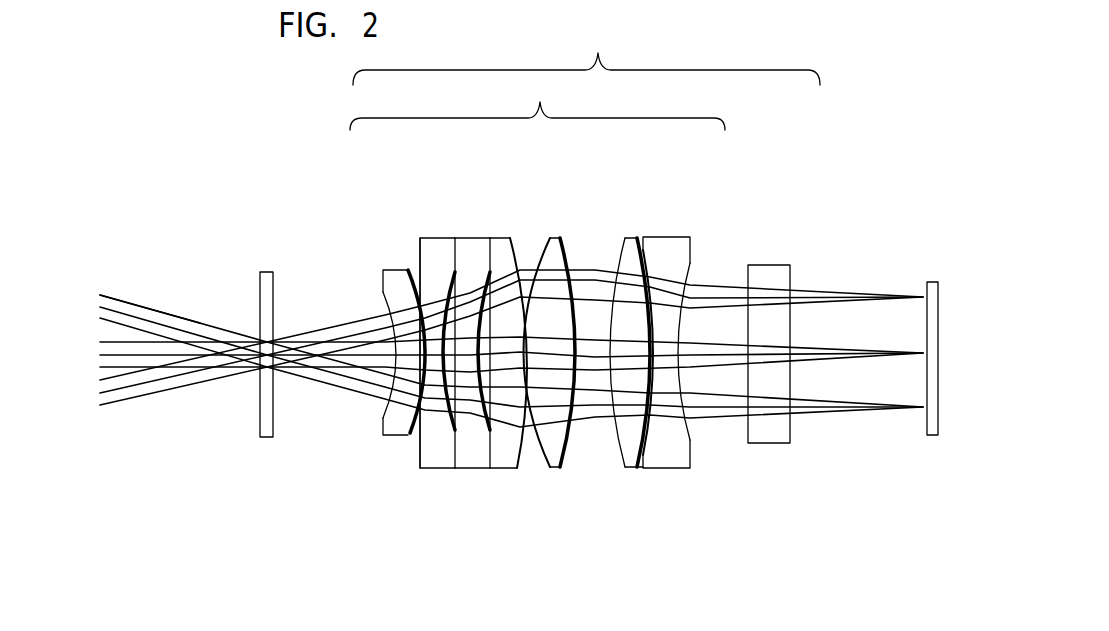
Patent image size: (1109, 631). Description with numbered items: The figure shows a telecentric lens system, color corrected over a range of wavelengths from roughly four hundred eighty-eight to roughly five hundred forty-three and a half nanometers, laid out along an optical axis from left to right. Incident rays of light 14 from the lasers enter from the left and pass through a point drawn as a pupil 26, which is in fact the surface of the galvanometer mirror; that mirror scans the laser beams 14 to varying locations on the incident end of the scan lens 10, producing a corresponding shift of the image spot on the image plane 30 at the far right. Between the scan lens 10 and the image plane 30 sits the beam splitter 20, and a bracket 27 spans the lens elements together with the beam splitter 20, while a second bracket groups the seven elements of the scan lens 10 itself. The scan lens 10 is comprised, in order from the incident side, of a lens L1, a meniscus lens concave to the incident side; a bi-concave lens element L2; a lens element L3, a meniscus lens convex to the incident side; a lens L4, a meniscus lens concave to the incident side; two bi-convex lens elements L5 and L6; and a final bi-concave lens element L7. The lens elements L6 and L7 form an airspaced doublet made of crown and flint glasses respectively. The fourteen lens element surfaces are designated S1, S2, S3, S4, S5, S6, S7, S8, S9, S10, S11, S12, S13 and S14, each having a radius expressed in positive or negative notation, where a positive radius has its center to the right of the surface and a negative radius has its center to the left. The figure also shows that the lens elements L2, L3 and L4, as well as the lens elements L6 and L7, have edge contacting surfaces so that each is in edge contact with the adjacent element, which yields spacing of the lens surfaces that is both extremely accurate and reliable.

The incident rays of light 14 is at (167, 320).
The pupil 26 is at (265, 272).
The projection lens assembly 27 is at (582, 309).
The scan lens 10 is at (562, 335).
The beam splitter 20 is at (767, 265).
The image plane 30 is at (932, 437).
The lens L1 is at (398, 270).
The lens element L2 is at (443, 238).
The lens element L3 is at (470, 238).
The lens L4 is at (497, 238).
The lens element L5 is at (550, 238).
The lens element L6 is at (628, 238).
The lens element L7 is at (667, 237).
The lens element surface S1 is at (385, 405).
The lens element surface S2 is at (418, 432).
The lens element surface S3 is at (428, 452).
The lens element surface S4 is at (453, 412).
The lens element surface S5 is at (458, 432).
The lens element surface S6 is at (488, 432).
The lens element surface S7 is at (505, 440).
The lens element surface S8 is at (527, 430).
The lens element surface S9 is at (545, 455).
The lens element surface S10 is at (577, 437).
The lens element surface S11 is at (617, 467).
The lens element surface S12 is at (637, 467).
The lens element surface S13 is at (673, 453).
The lens element surface S14 is at (700, 420).